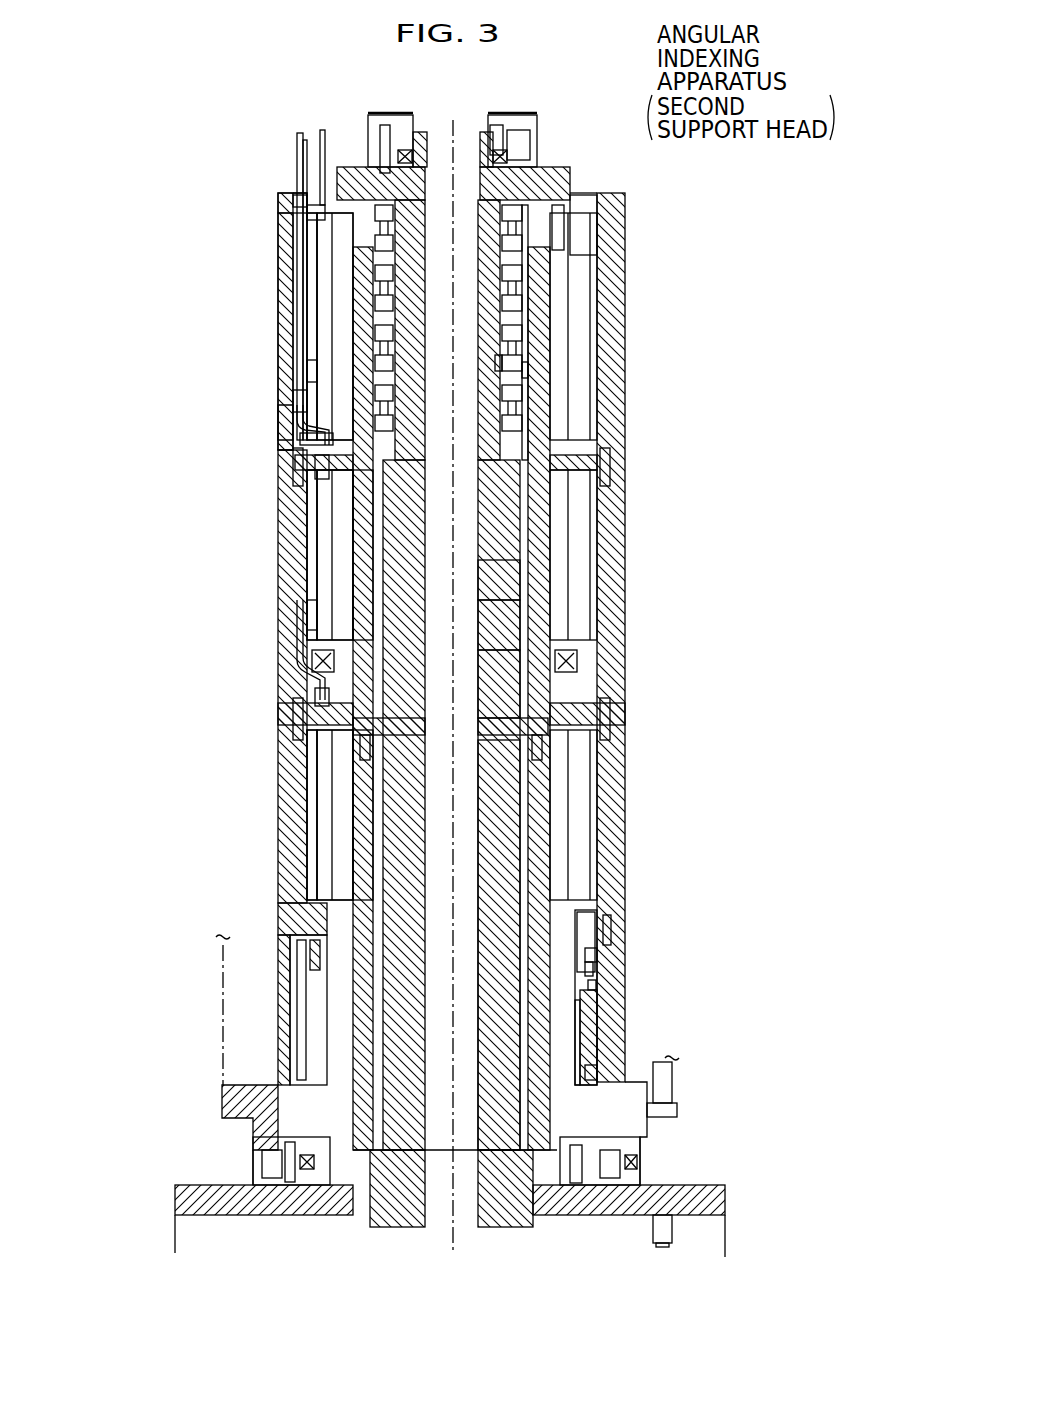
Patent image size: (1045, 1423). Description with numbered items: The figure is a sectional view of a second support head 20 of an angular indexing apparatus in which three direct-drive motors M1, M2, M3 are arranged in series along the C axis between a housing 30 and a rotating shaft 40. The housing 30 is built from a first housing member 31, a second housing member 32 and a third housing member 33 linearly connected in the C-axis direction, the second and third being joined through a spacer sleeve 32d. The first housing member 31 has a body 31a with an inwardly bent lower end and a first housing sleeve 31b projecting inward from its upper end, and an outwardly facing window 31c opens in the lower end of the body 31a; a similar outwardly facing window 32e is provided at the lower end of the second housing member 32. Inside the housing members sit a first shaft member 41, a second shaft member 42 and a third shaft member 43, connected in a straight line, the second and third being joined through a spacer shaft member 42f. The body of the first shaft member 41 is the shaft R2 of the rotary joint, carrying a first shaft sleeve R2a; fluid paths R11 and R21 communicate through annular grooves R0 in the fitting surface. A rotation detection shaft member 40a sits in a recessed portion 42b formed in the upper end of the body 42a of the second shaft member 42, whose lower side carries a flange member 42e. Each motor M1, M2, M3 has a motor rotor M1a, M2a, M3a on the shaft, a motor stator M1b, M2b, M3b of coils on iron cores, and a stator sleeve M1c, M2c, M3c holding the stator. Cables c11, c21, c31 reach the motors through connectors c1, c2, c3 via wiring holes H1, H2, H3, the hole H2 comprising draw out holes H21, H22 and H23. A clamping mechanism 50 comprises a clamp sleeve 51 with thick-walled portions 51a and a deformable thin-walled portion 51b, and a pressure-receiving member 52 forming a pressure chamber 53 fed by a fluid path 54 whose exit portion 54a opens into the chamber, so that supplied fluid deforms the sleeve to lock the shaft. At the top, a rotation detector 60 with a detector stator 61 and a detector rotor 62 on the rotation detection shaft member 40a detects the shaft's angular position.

The C axis C is at (453, 657).
The second support head 20 is at (625, 178).
The housing 30 is at (276, 268).
The first housing member 31 is at (190, 178).
The body of the first housing member 31a is at (291, 238).
The first housing sleeve 31b is at (293, 202).
The outwardly facing window 31c is at (286, 422).
The second housing member 32 is at (295, 470).
The spacer sleeve 32d is at (295, 714).
The outwardly facing window 32e is at (312, 660).
The third housing member 33 is at (277, 947).
The rotating shaft 40 is at (500, 533).
The rotation detection shaft member 40a is at (422, 212).
The first shaft member 41 is at (748, 295).
The second shaft member 42 is at (478, 667).
The body of the second shaft member 42a is at (488, 632).
The recessed portion 42b is at (477, 592).
The flange member 42e is at (698, 1195).
The spacer shaft member 42f is at (478, 733).
The third shaft member 43 is at (503, 805).
The clamping mechanism 50 is at (733, 893).
The clamp sleeve 51 is at (621, 940).
The thick-walled portion 51a is at (607, 933).
The thin-walled portion 51b is at (577, 1032).
The pressure-receiving member 52 is at (600, 960).
The pressure chamber 53 is at (580, 1015).
The fluid path 54 is at (600, 968).
The exit portion 54a is at (593, 988).
The rotation detector 60 is at (588, 116).
The detector stator 61 is at (515, 137).
The detector rotor 62 is at (497, 132).
The drive motor M1 is at (138, 345).
The motor rotor M1a is at (352, 300).
The motor stator M1b is at (325, 333).
The stator sleeve M1c is at (312, 372).
The drive motor M2 is at (138, 487).
The motor rotor M2a is at (352, 522).
The motor stator M2b is at (325, 553).
The stator sleeve M2c is at (305, 580).
The drive motor M3 is at (138, 835).
The motor rotor M3a is at (350, 792).
The motor stator M3b is at (325, 823).
The stator sleeve M3c is at (305, 855).
The cable wiring hole H1 is at (317, 178).
The cable wiring hole H2 is at (298, 402).
The draw out hole H21 is at (310, 437).
The draw out hole H22 is at (310, 368).
The draw out hole H23 is at (314, 211).
The cable wiring hole H3 is at (307, 615).
The connector c1 is at (317, 213).
The cable c11 is at (320, 150).
The connector c2 is at (322, 464).
The cable c21 is at (296, 418).
The connector c3 is at (318, 696).
The cable c31 is at (300, 655).
The annular groove R0 is at (537, 343).
The fluid path R11 is at (500, 362).
The fluid path R21 is at (523, 370).
The shaft R2 is at (520, 343).
The first shaft sleeve R2a is at (558, 230).